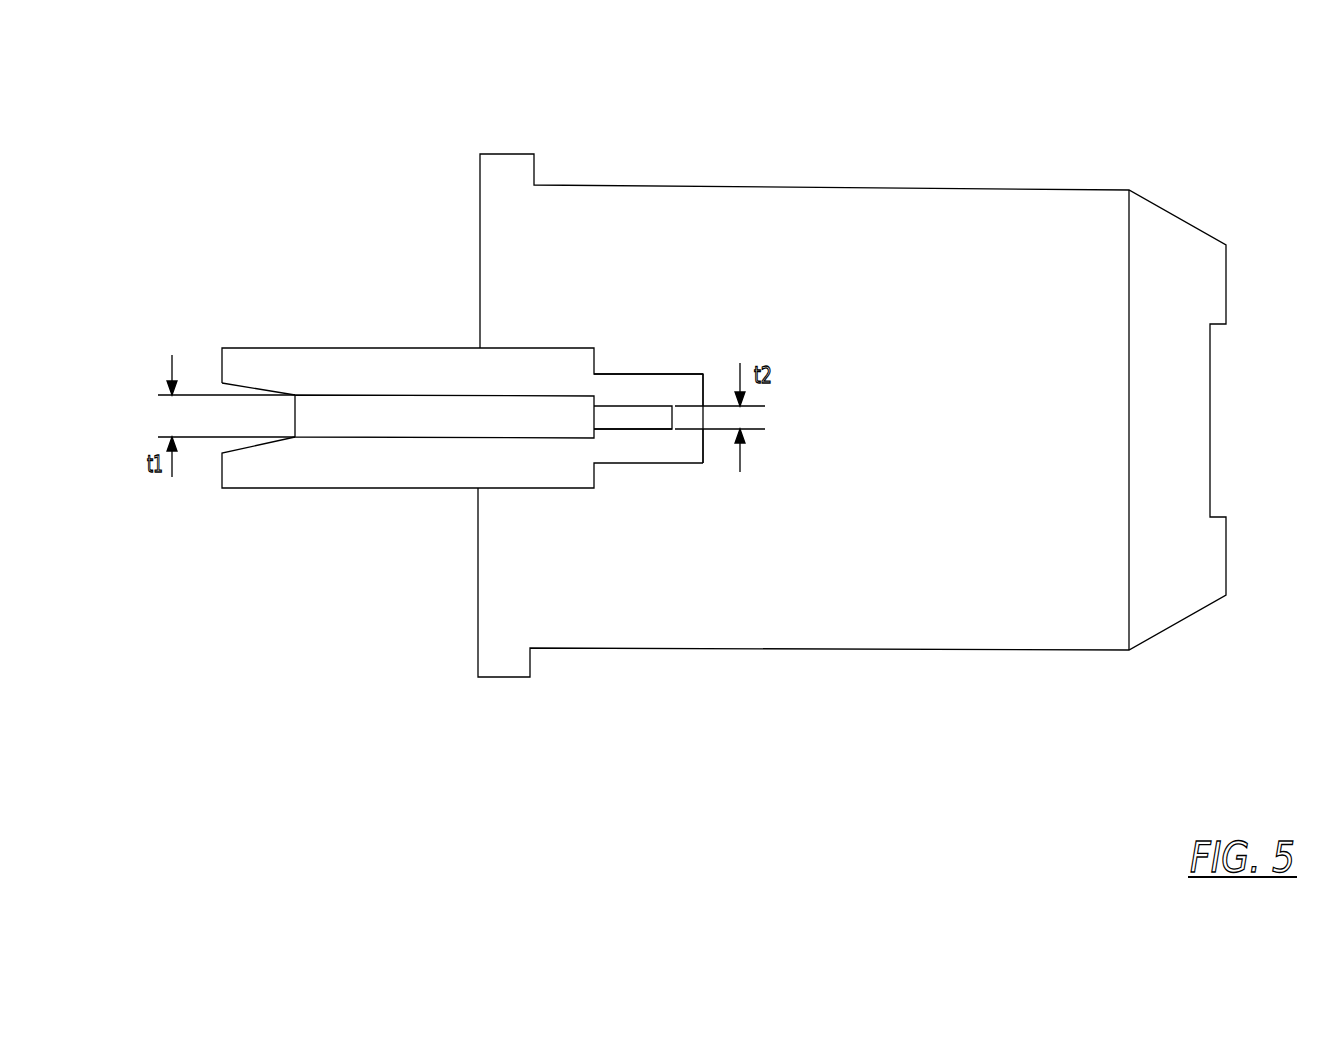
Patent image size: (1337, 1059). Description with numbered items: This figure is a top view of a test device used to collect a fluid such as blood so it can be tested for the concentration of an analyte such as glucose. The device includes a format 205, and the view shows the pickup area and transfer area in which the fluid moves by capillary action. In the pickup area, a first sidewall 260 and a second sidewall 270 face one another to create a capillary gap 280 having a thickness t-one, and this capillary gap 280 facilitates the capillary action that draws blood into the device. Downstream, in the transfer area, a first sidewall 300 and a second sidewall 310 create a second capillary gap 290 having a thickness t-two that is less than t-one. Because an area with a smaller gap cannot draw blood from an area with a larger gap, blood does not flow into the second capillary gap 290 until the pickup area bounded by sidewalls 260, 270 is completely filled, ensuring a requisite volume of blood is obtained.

The format 205 is at (1086, 226).
The first sidewall 260 is at (427, 395).
The second sidewall 270 is at (335, 437).
The capillary gap 280 is at (392, 420).
The second capillary gap 290 is at (663, 421).
The first sidewall 300 is at (647, 406).
The second sidewall 310 is at (616, 430).